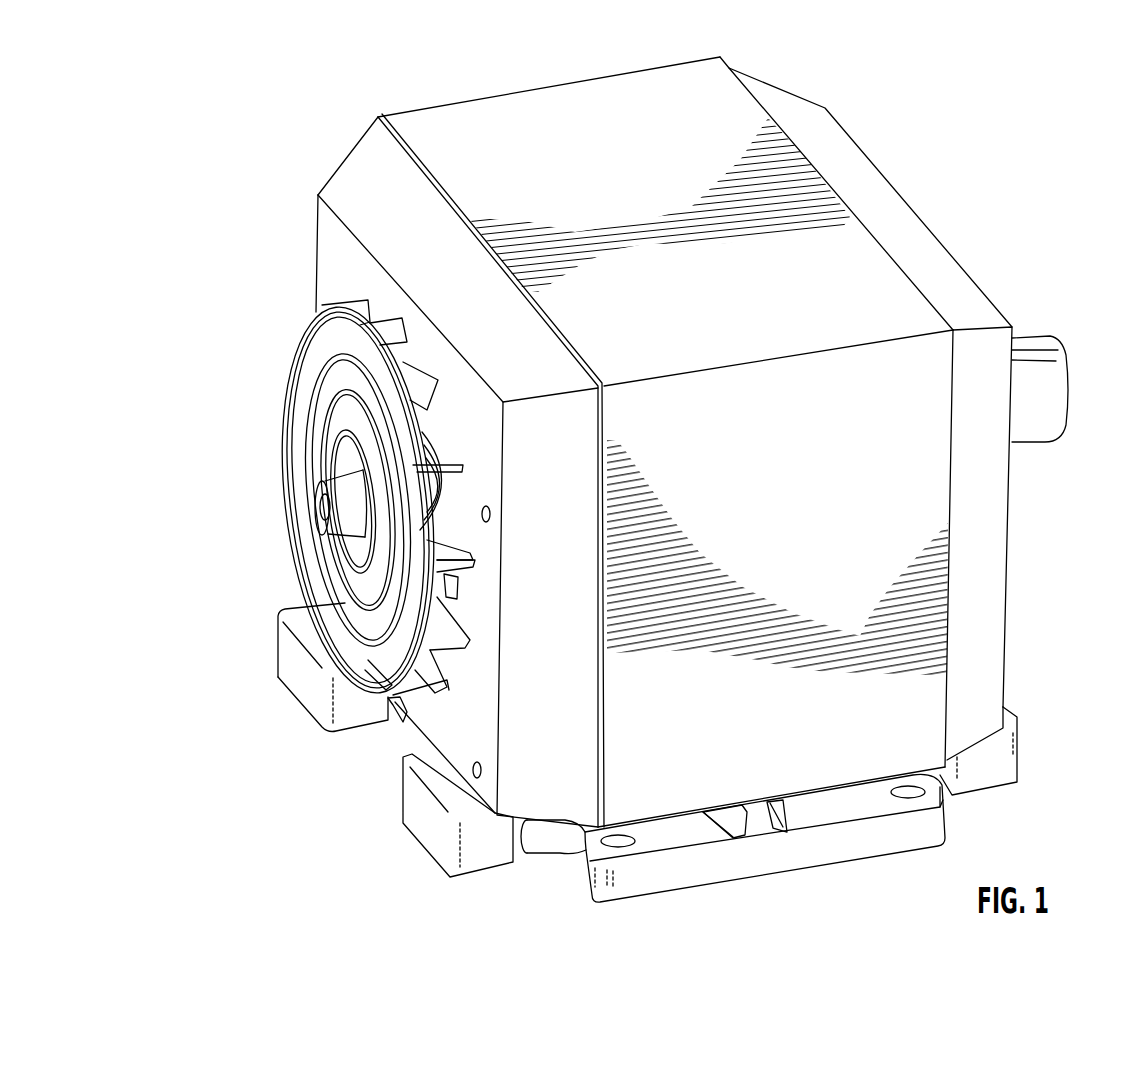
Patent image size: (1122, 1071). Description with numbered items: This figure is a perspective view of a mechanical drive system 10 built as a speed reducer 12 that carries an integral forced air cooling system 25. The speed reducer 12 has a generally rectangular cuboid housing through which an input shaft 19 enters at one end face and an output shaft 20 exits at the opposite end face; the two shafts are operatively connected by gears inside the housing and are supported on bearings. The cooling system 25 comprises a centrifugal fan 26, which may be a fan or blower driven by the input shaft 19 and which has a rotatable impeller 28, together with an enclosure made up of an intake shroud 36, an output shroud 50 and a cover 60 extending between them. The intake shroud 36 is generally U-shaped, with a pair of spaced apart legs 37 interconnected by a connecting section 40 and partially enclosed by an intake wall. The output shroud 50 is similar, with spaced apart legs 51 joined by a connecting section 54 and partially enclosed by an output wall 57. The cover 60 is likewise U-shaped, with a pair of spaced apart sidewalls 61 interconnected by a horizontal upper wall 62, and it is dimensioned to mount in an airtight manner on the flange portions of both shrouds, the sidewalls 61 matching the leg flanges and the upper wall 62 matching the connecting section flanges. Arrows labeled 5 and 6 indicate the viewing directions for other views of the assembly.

The section line 5- 5 is at (228, 367).
The section line 6- 6 is at (325, 58).
The mechanical drive system 10 is at (213, 160).
The speed reducer 12 is at (883, 837).
The input shaft 19 is at (323, 523).
The output shaft 20 is at (1047, 407).
The forced air cooling system 25 is at (178, 242).
The centrifugal fan 26 is at (240, 335).
The impeller 28 is at (307, 447).
The intake shroud 36 is at (810, 185).
The legs of the intake shroud 37 is at (983, 563).
The connecting section of the intake shroud 40 is at (953, 280).
The output shroud 50 is at (358, 207).
The legs of the output shroud 51 is at (530, 780).
The connecting section of the output shroud 54 is at (383, 183).
The output wall 57 is at (333, 243).
The cover 60 is at (662, 100).
The sidewalls of the cover 61 is at (930, 700).
The horizontal upper wall of the cover 62 is at (730, 108).